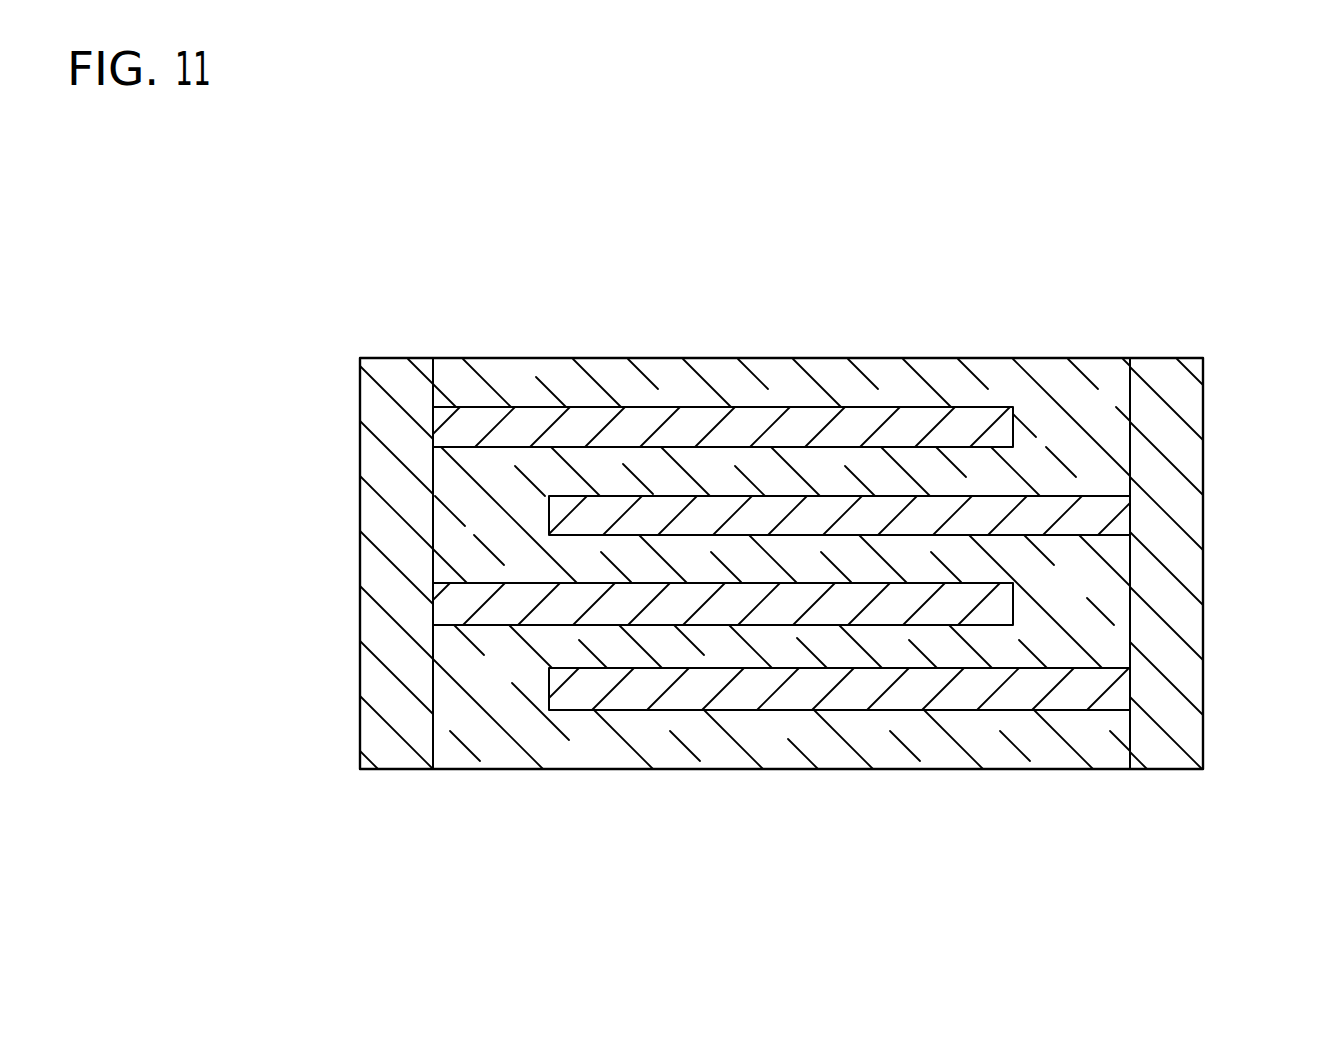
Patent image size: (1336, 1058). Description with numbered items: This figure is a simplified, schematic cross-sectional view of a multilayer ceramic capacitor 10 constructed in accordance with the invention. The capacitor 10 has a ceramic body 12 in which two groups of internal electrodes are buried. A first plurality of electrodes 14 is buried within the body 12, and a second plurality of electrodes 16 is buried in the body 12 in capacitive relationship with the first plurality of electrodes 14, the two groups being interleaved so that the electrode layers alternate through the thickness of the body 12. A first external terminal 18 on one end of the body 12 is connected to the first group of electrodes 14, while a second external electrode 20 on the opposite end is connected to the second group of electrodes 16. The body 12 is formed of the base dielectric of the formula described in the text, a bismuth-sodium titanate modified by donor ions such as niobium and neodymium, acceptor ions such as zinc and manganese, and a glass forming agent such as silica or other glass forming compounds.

The multilayer ceramic capacitor 10 is at (1283, 191).
The ceramic body 12 is at (533, 730).
The first plurality of electrodes 14 is at (868, 417).
The second plurality of electrodes 16 is at (1050, 503).
The first external terminal 18 is at (378, 530).
The second external electrode 20 is at (1177, 450).